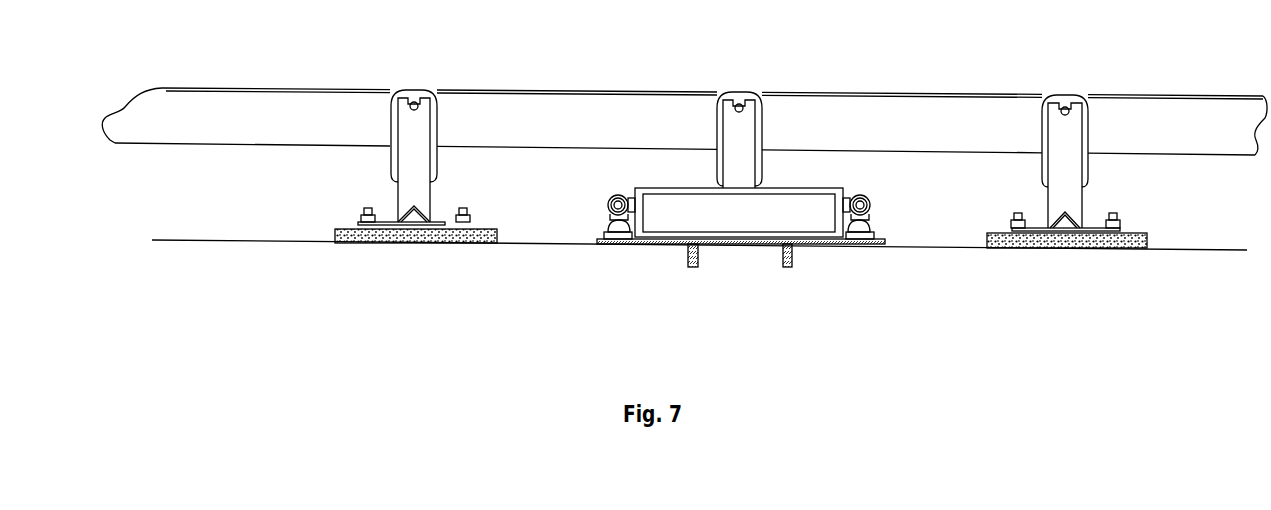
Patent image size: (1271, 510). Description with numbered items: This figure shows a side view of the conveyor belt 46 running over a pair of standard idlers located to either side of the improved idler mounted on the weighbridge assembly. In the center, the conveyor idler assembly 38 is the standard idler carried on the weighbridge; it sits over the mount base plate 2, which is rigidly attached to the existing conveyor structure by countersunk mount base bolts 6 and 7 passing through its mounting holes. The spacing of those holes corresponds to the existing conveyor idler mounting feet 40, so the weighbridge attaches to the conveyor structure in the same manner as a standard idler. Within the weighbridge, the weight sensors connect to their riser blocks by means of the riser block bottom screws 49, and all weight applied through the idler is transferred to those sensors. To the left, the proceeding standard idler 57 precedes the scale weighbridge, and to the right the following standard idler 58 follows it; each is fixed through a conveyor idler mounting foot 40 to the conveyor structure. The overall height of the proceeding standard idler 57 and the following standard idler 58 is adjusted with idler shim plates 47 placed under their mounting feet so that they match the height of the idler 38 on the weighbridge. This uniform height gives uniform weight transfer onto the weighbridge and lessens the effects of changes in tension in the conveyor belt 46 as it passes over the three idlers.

The conveyor belt 46 is at (263, 110).
The proceeding standard idler 57 is at (415, 147).
The conveyor idler assembly 38 is at (740, 148).
The proceeding standard idler 58 is at (1065, 152).
The conveyor idler mounting foot 40 is at (442, 228).
The idler shim plate 47 is at (352, 235).
The riser block bottom screw 49 is at (1130, 241).
The mount base plate 2 is at (644, 244).
The mount base bolt 6 is at (690, 268).
The mount base bolt 7 is at (790, 268).